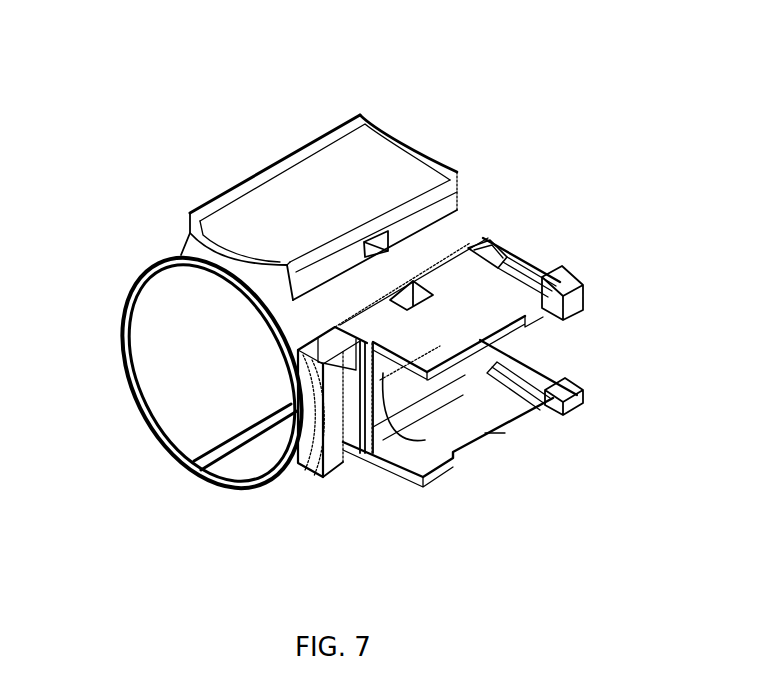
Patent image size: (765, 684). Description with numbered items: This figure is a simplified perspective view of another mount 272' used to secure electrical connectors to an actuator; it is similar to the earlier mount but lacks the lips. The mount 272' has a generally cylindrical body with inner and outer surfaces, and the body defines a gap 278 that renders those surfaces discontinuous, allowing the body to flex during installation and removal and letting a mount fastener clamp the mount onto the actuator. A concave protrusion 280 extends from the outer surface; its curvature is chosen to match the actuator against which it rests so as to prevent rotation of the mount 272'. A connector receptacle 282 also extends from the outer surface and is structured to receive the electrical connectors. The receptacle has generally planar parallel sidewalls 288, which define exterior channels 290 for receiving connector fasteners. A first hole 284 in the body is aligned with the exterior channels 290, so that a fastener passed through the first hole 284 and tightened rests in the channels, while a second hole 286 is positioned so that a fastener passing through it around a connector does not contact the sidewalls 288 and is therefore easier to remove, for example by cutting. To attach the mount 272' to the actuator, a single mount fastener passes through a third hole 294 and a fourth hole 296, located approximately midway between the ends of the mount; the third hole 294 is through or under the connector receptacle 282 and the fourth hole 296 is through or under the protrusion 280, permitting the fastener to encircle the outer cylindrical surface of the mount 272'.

The mount 272' is at (271, 180).
The gap 278 is at (194, 478).
The concave protrusion 280 is at (312, 170).
The connector receptacle 282 is at (510, 437).
The first hole 284 is at (505, 258).
The second hole 286 is at (357, 357).
The sidewalls 288 is at (455, 337).
The exterior channels 290 is at (562, 280).
The third hole 294 is at (497, 268).
The fourth hole 296 is at (373, 238).